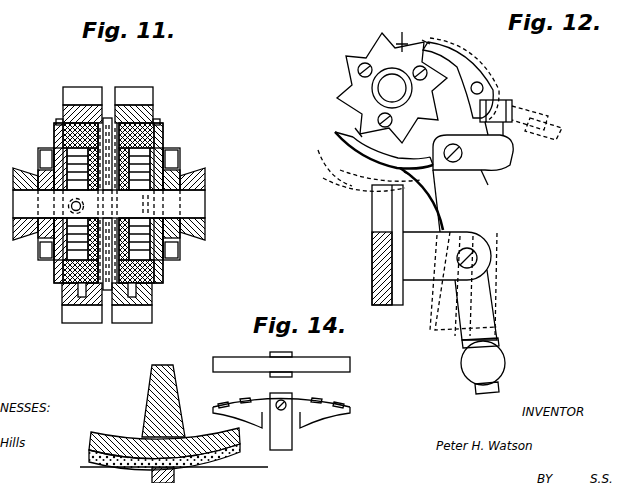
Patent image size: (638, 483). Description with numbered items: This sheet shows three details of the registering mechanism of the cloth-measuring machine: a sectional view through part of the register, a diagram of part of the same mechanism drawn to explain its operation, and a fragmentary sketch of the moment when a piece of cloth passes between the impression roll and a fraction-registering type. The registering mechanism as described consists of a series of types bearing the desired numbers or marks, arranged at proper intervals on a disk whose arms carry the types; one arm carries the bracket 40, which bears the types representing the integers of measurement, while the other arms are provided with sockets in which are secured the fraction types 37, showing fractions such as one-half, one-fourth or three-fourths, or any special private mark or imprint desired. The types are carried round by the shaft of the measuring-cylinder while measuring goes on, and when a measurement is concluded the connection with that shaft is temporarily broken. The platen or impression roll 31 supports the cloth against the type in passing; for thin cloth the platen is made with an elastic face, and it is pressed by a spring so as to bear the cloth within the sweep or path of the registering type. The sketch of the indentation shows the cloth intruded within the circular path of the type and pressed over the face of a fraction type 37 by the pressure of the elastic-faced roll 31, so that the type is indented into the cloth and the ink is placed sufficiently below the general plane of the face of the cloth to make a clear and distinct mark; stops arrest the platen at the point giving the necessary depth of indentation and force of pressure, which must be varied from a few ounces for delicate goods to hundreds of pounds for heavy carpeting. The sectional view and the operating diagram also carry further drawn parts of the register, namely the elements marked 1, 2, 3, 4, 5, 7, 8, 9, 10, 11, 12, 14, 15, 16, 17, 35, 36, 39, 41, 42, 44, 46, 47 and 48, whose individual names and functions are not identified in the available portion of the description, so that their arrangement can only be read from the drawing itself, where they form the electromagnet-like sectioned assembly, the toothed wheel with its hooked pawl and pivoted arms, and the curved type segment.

In FIG. 11, the electromagnet core / screw 1 is at (63, 136).
In FIG. 12, the electromagnet core / screw 1 is at (378, 88).
In FIG. 14, the electromagnet core / screw 1 is at (272, 392).
In FIG. 11, the electromagnet core half 2 is at (153, 133).
In FIG. 11, the supporting bar / wheel hub 3 is at (109, 204).
In FIG. 12, the supporting bar / wheel hub 3 is at (392, 88).
In FIG. 11, the side yoke 4 is at (45, 149).
In FIG. 11, the pole piece 5 is at (62, 120).
In FIG. 11, the lower yoke / ratchet wheel 7 is at (40, 250).
In FIG. 12, the lower yoke / ratchet wheel 7 is at (360, 62).
In FIG. 11, the lower yoke / tooth 8 is at (177, 248).
In FIG. 12, the lower yoke / tooth 8 is at (421, 42).
In FIG. 12, the wheel tooth 9 is at (356, 130).
In FIG. 12, the curved arm 10 is at (345, 142).
In FIG. 12, the pawl 11 is at (477, 70).
In FIG. 12, the pawl support 12 is at (491, 175).
In FIG. 12, the lever arm 14 is at (463, 286).
In FIG. 12, the bracket 15 is at (512, 112).
In FIG. 12, the pivot screw 16 is at (478, 258).
In FIG. 12, the knob 17 is at (506, 362).
In FIG. 14, the platen or impression roll 31 is at (176, 376).
In FIG. 11, the lower core block 35 is at (66, 297).
In FIG. 11, the lower core block 36 is at (153, 296).
In FIG. 14, the fraction types 37 is at (173, 475).
In FIG. 12, the stop 39 is at (403, 32).
In FIG. 12, the bracket 40 is at (447, 256).
In FIG. 12, the guide arc 41 is at (437, 206).
In FIG. 12, the guide pin 42 is at (412, 180).
In FIG. 11, the screw 44 is at (70, 206).
In FIG. 11, the spring 46 is at (157, 203).
In FIG. 14, the type segment 47 is at (330, 377).
In FIG. 14, the type segment 48 is at (226, 376).